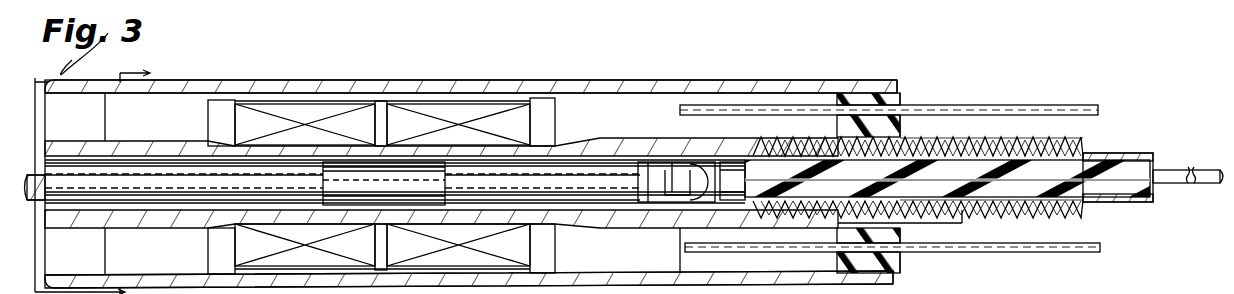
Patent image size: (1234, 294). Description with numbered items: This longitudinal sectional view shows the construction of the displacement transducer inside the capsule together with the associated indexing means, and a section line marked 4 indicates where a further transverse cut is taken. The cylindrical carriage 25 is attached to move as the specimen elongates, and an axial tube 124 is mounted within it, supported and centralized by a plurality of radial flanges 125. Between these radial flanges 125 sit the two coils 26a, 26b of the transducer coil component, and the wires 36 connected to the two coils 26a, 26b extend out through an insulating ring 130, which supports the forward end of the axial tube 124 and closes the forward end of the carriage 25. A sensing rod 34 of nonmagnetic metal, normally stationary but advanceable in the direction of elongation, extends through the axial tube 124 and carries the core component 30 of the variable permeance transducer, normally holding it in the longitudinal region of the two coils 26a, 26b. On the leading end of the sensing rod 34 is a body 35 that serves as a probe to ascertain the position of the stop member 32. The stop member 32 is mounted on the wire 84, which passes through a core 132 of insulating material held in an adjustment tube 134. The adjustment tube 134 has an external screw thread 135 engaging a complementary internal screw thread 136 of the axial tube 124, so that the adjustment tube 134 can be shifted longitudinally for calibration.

The section line 4- 4 is at (143, 180).
The carriage 25 is at (542, 78).
The coil 26a is at (310, 115).
The coil 26b is at (453, 115).
The radial flanges 125 is at (208, 124).
The axial tube 124 is at (604, 148).
The sensing rod 34 is at (505, 180).
The core component 30 is at (398, 188).
The probe body 35 is at (680, 186).
The stop member 32 is at (735, 170).
The wires 36 is at (935, 110).
The insulating ring 130 is at (900, 258).
The wire 84 is at (1000, 190).
The adjustment tube 134 is at (1083, 158).
The external screw thread 135 is at (1005, 152).
The internal screw thread 136 is at (940, 152).
The insulating core 132 is at (1113, 190).